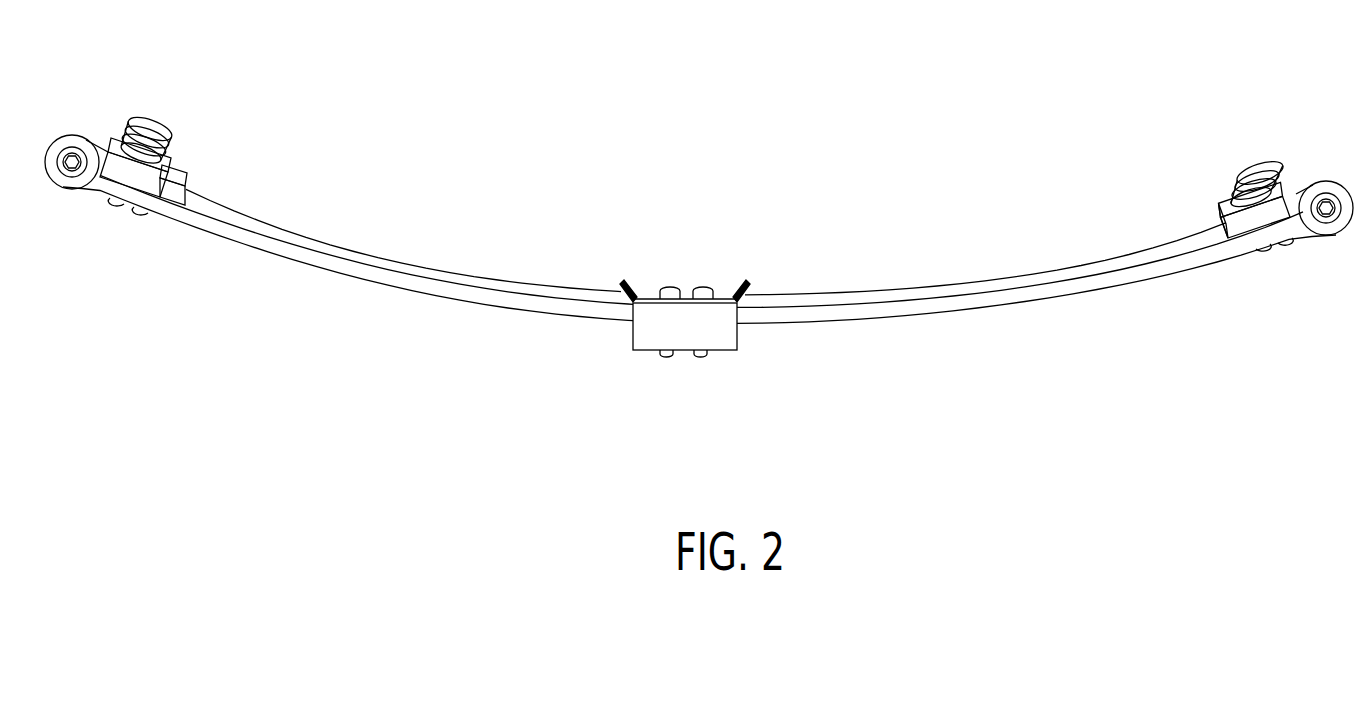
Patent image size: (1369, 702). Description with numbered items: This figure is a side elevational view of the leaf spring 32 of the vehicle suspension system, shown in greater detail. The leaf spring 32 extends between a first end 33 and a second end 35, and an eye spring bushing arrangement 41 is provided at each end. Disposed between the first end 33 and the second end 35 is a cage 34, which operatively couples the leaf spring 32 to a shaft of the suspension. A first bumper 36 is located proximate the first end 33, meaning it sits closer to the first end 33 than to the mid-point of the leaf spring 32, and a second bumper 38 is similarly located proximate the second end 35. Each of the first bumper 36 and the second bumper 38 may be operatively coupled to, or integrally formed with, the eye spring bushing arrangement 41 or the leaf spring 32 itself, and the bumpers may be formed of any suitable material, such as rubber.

The leaf spring 32 is at (472, 300).
The first end 33 is at (114, 138).
The cage 34 is at (726, 344).
The second end 35 is at (1304, 190).
The first bumper 36 is at (162, 120).
The second bumper 38 is at (1246, 170).
The eye spring bushing arrangement 41 is at (70, 122).